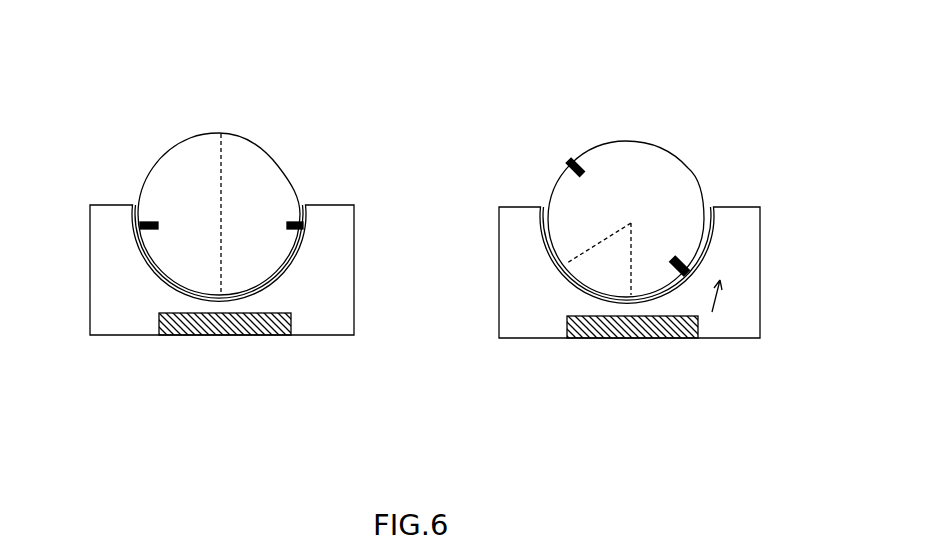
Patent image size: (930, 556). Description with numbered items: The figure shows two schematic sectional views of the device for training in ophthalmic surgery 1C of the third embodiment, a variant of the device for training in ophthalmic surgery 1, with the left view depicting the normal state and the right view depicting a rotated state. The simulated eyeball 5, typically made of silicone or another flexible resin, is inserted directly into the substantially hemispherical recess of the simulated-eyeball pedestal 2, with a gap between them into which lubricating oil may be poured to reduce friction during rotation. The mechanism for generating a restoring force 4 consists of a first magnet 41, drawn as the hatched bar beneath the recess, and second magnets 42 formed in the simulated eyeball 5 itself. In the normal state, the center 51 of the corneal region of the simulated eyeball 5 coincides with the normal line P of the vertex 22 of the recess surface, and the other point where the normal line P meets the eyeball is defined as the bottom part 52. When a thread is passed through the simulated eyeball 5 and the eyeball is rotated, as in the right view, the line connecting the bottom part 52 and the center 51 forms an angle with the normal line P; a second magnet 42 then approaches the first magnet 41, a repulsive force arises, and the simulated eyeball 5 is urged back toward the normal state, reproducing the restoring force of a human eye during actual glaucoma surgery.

The device for training in ophthalmic surgery 1 is at (205, 28).
The device for training in ophthalmic surgery 1C is at (415, 274).
The simulated-eyeball pedestal 2 is at (340, 252).
The mechanism for generating a restoring force 4 is at (437, 242).
The first magnet 41 is at (190, 335).
The second magnet 42 is at (152, 222).
The simulated eyeball 5 is at (265, 178).
The center of corneal region 51 is at (223, 132).
The bottom part of the simulated eyeball 52 is at (565, 266).
The vertex of the hemispherical surface of the recess 22 is at (465, 265).
The normal line P is at (220, 233).